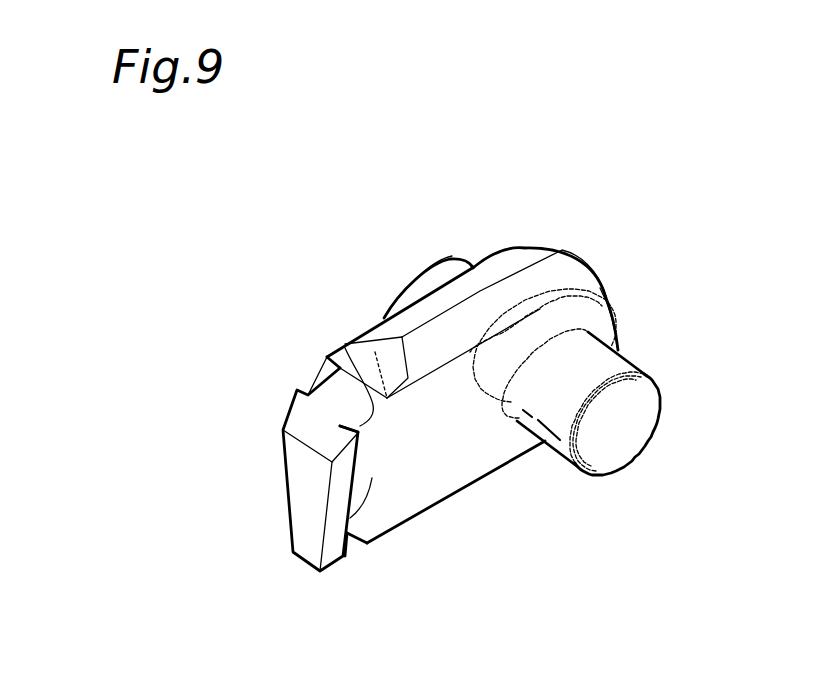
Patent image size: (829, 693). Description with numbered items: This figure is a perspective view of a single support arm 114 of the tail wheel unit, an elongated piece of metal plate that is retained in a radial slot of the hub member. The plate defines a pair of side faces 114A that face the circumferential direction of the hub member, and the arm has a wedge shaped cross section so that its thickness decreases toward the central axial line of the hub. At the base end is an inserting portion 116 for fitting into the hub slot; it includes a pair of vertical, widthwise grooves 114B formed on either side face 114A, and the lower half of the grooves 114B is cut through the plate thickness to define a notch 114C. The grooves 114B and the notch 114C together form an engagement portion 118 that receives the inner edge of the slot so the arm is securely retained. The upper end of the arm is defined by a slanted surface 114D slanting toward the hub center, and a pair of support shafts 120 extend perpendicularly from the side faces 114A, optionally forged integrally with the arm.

The support arm 114 is at (577, 200).
The side face 114A is at (488, 455).
The groove 114B is at (308, 386).
The notch 114C is at (388, 400).
The slanted surface 114D is at (375, 352).
The inserting portion 116 is at (345, 348).
The engagement portion 118 is at (347, 540).
The support shaft 120 is at (448, 266).